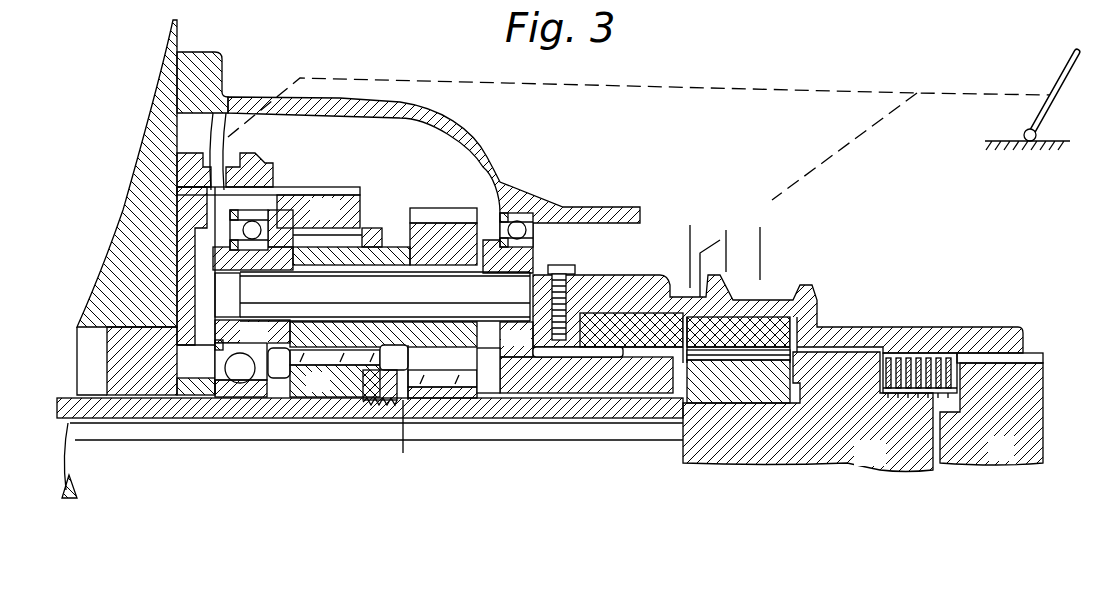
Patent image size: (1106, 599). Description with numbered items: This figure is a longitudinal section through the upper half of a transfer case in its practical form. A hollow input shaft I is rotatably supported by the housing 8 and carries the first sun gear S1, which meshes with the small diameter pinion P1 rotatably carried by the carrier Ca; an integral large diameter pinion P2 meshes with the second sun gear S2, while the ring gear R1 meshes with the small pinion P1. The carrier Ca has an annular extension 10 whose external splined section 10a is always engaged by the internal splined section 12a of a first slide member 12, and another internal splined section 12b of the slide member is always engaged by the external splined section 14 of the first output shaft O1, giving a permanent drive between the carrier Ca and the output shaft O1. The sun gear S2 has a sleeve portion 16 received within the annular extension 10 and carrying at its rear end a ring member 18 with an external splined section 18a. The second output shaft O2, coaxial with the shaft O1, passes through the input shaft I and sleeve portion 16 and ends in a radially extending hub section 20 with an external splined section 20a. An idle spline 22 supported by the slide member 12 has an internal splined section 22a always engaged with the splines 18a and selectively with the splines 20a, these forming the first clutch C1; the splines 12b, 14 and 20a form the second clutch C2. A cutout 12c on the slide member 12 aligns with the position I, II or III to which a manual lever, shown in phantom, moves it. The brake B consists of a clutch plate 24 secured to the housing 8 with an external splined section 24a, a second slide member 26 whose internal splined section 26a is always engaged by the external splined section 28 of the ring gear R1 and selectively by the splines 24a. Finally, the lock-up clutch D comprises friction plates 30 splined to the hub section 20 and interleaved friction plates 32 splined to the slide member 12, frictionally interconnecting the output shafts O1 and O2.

The housing 8 is at (140, 197).
The annular extension 10 is at (583, 370).
The external splined section 10a is at (623, 353).
The first slide member 12 is at (790, 335).
The internal splined section 12a is at (585, 278).
The internal splined section 12b is at (893, 340).
The cutout 12c is at (682, 292).
The external splined section 14 is at (1040, 363).
The sleeve portion 16 is at (653, 412).
The ring member 18 is at (748, 383).
The external splined section 18a is at (710, 353).
The hub section 20 is at (850, 397).
The external splined section 20a is at (813, 357).
The idle spline 22 is at (835, 345).
The internal splined section 22a is at (773, 332).
The clutch plate 24 is at (182, 265).
The external splined section 24a is at (177, 167).
The second slide member 26 is at (273, 170).
The internal splined section 26a is at (222, 110).
The external splined section 28 is at (328, 192).
The friction plates 30 is at (908, 395).
The friction plates 32 is at (948, 357).
The brake B is at (256, 142).
The small diameter pinion P1 is at (371, 237).
The large diameter pinion P2 is at (448, 210).
The ring gear R1 is at (339, 220).
The first sun gear S1 is at (329, 394).
The second sun gear S2 is at (456, 419).
The carrier Ca is at (267, 343).
The first clutch C1 is at (868, 328).
The second clutch C2 is at (902, 342).
The lock-up clutch D is at (923, 404).
The first output shaft O1 is at (1012, 460).
The second output shaft O2 is at (882, 465).
The input shaft I is at (77, 390).
The II-position II is at (723, 236).
The III-position III is at (759, 240).